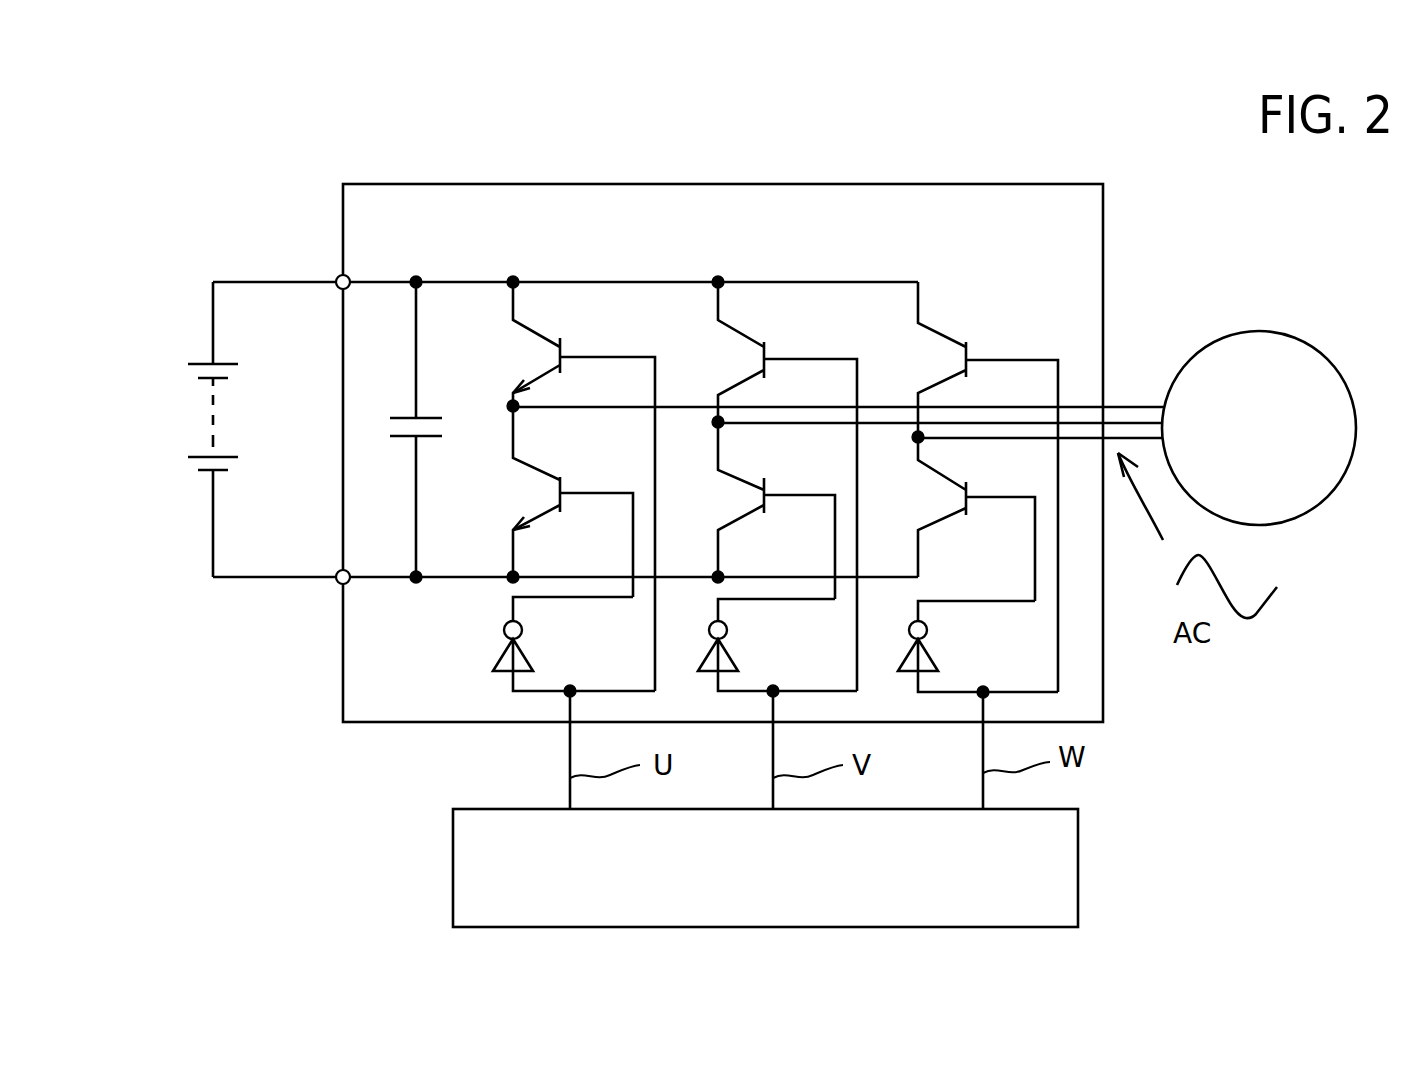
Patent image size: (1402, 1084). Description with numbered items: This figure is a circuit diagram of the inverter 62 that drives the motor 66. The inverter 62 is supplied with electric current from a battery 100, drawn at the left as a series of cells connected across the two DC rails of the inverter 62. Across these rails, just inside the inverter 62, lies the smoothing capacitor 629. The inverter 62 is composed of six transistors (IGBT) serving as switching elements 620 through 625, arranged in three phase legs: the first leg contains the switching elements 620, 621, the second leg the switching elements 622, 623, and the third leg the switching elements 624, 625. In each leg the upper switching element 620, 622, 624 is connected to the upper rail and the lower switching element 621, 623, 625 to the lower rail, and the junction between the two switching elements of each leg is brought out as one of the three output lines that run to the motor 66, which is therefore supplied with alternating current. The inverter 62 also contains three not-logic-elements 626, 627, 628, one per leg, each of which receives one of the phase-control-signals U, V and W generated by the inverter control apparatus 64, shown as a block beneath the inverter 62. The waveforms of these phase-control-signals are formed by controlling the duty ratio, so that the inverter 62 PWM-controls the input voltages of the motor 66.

The inverter 62 is at (1103, 260).
The inverter control apparatus 64 is at (1078, 862).
The motor 66 is at (1254, 333).
The battery 100 is at (196, 463).
The switching element 620 is at (563, 352).
The switching element 621 is at (561, 488).
The switching element 622 is at (767, 352).
The switching element 623 is at (770, 487).
The switching element 624 is at (968, 352).
The switching element 625 is at (931, 527).
The not-logic-element 626 is at (523, 652).
The not-logic-element 627 is at (728, 652).
The not-logic-element 628 is at (928, 652).
The smoothing capacitor 629 is at (428, 417).